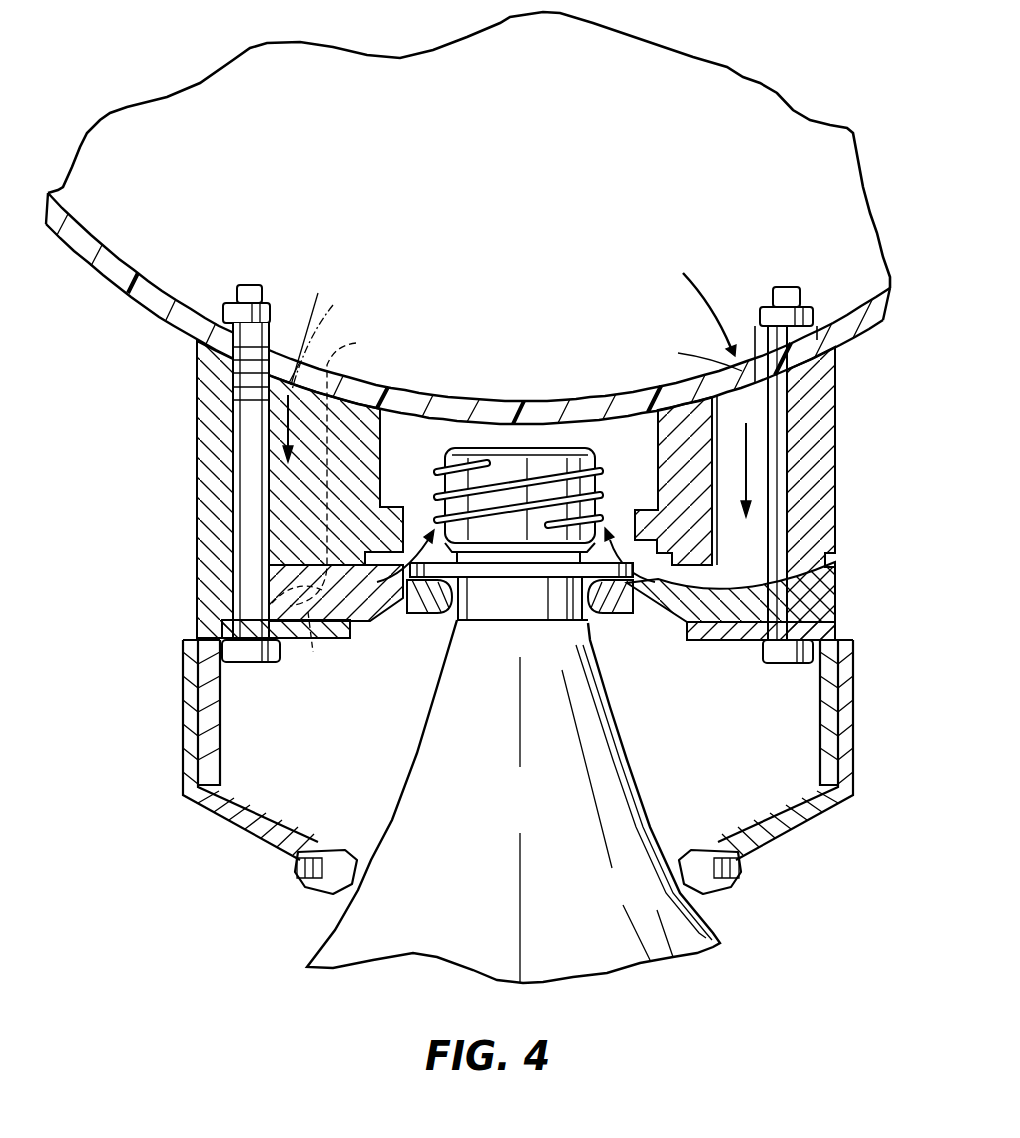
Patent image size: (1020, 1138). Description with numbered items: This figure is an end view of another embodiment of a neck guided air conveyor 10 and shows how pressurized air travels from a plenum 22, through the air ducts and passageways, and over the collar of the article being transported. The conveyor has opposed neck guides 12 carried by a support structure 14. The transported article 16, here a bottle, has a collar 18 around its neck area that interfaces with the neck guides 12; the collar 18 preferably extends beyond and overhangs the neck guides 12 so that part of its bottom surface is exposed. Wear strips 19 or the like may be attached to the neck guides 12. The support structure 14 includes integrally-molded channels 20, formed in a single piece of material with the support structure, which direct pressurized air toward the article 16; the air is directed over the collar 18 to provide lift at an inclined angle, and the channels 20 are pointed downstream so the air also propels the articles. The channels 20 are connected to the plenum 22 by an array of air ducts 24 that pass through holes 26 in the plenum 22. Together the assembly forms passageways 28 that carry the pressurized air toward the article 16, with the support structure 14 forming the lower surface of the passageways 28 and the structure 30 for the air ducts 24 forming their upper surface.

The neck guided air conveyor 10 is at (95, 108).
The plenum 22 is at (757, 83).
The structure for air ducts 30 is at (838, 418).
The neck guides 12 is at (400, 620).
The integrally-molded channels 20 is at (748, 600).
The holes 26 is at (727, 367).
The air ducts 24 is at (363, 470).
The passageways 28 is at (670, 352).
The wear strips 19 is at (446, 588).
The collar 18 is at (548, 580).
The support structure 14 is at (363, 620).
The transported article 16 is at (627, 763).